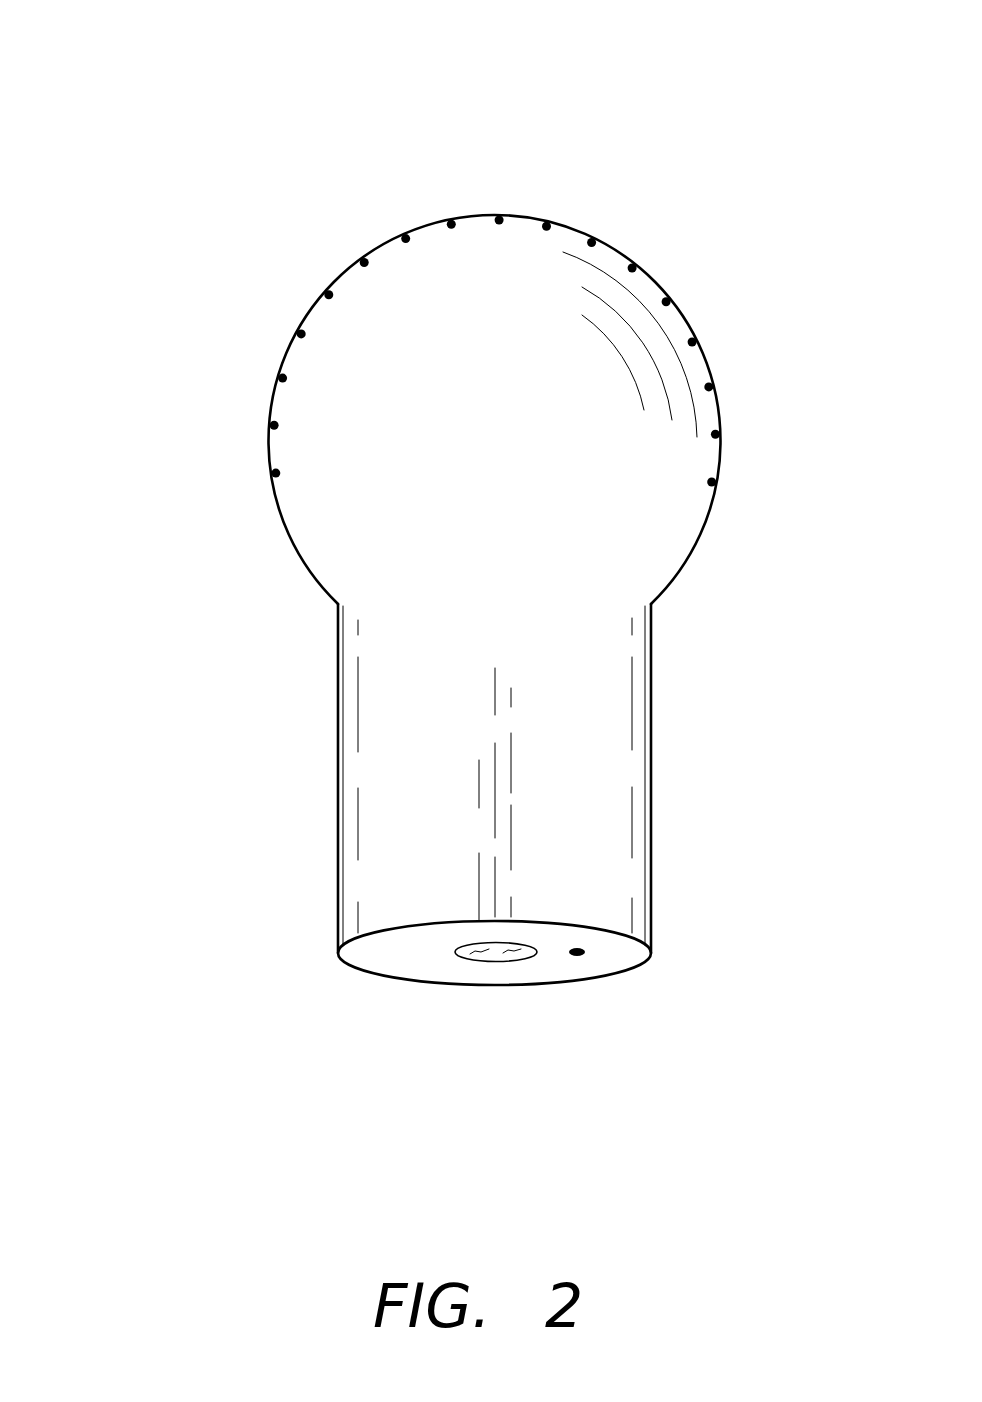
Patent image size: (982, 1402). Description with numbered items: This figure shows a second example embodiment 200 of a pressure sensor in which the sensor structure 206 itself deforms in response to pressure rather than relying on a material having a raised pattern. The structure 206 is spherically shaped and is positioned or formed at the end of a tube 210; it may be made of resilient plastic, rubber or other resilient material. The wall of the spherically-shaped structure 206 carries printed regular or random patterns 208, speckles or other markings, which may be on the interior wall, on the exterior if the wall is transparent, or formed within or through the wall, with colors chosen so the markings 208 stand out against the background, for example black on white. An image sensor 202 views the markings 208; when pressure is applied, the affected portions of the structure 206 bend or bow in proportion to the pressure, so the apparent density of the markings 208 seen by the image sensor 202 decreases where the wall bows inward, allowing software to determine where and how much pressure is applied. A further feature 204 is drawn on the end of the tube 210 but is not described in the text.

The embodiment 200 is at (626, 150).
The image sensor 202 is at (498, 955).
The aperture 204 is at (577, 953).
The sensor structure 206 is at (267, 445).
The printed patterns 208 is at (270, 475).
The tube 210 is at (652, 808).